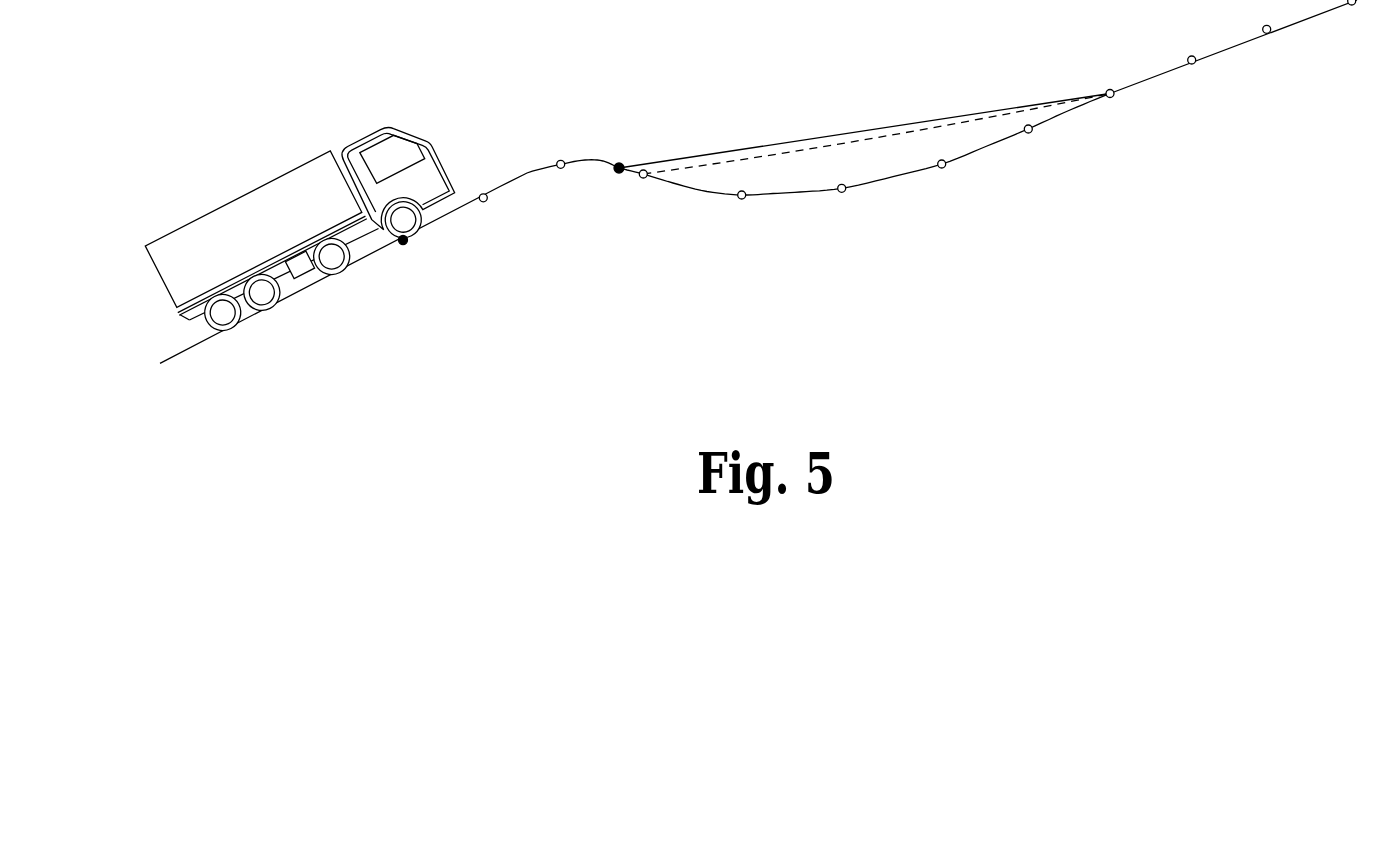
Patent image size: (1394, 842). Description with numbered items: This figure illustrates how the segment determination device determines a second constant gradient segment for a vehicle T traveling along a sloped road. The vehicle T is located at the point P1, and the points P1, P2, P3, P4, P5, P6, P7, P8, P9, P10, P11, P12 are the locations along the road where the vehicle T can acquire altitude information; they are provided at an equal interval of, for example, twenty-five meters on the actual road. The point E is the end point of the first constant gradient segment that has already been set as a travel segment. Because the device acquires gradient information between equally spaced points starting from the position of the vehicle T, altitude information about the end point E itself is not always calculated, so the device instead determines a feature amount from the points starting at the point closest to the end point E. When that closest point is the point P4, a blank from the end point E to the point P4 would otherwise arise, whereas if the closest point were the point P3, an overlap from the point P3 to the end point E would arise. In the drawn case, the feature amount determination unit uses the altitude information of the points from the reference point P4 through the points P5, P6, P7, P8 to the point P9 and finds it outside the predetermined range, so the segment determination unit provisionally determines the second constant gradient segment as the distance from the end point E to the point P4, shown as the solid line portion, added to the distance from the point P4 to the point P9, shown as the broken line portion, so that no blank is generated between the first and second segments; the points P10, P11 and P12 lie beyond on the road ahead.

The vehicle T is at (387, 128).
The end point E is at (619, 168).
The point P1 is at (402, 262).
The point P2 is at (486, 216).
The point P3 is at (562, 145).
The point P4 is at (644, 193).
The point P5 is at (742, 214).
The point P6 is at (842, 207).
The point P7 is at (942, 182).
The point P8 is at (1029, 147).
The point P9 is at (1111, 113).
The point P10 is at (1195, 78).
The point P11 is at (1268, 48).
The point P12 is at (1353, 21).